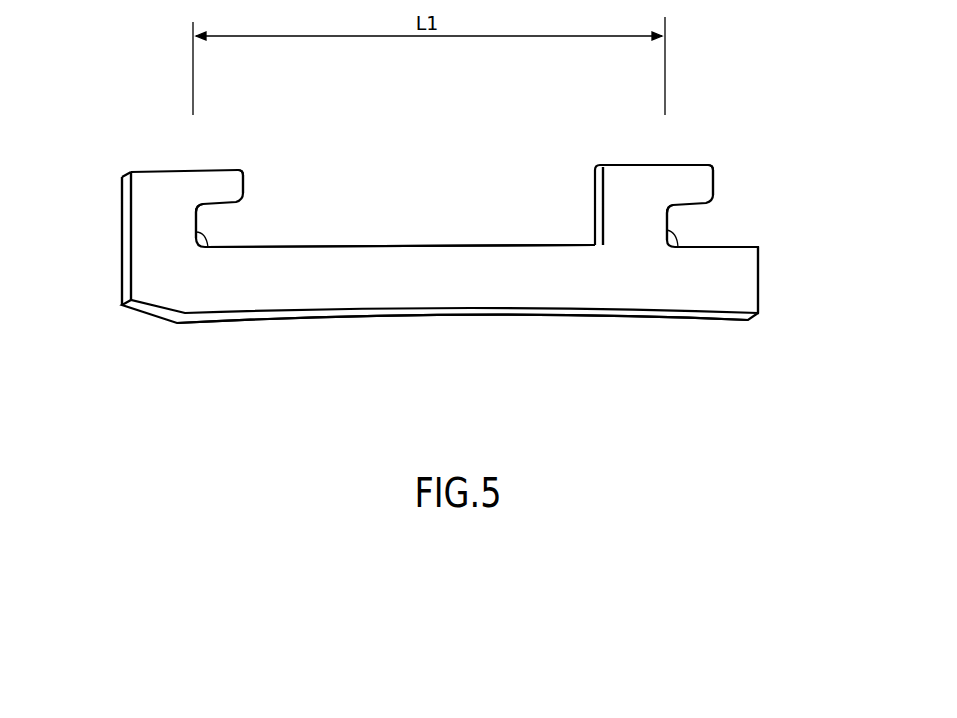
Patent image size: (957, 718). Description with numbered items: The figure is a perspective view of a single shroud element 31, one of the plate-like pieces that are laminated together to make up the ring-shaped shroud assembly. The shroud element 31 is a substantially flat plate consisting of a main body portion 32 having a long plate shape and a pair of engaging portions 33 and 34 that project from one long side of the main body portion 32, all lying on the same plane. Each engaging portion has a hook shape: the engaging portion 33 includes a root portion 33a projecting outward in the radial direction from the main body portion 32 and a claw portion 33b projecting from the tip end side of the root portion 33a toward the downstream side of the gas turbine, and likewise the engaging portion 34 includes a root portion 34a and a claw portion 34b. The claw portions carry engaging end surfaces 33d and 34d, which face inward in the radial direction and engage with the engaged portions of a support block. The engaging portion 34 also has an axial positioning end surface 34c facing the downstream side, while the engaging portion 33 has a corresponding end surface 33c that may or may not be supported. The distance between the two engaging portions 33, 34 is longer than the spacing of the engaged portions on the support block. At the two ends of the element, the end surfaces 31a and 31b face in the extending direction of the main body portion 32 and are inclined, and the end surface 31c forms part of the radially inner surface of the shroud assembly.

The shroud element 31 is at (505, 318).
The end surface 31a is at (120, 247).
The end surface 31b is at (760, 277).
The end surface 31c is at (582, 322).
The main body portion 32 is at (410, 293).
The engaging portion 33 is at (62, 88).
The root portion 33a is at (162, 217).
The claw portion 33b is at (218, 190).
The end surface 33c is at (210, 249).
The engaging end surface 33d is at (213, 215).
The engaging portion 34 is at (695, 85).
The root portion 34a is at (628, 216).
The claw portion 34b is at (693, 182).
The axial positioning end surface 34c is at (680, 210).
The engaging end surface 34d is at (683, 207).